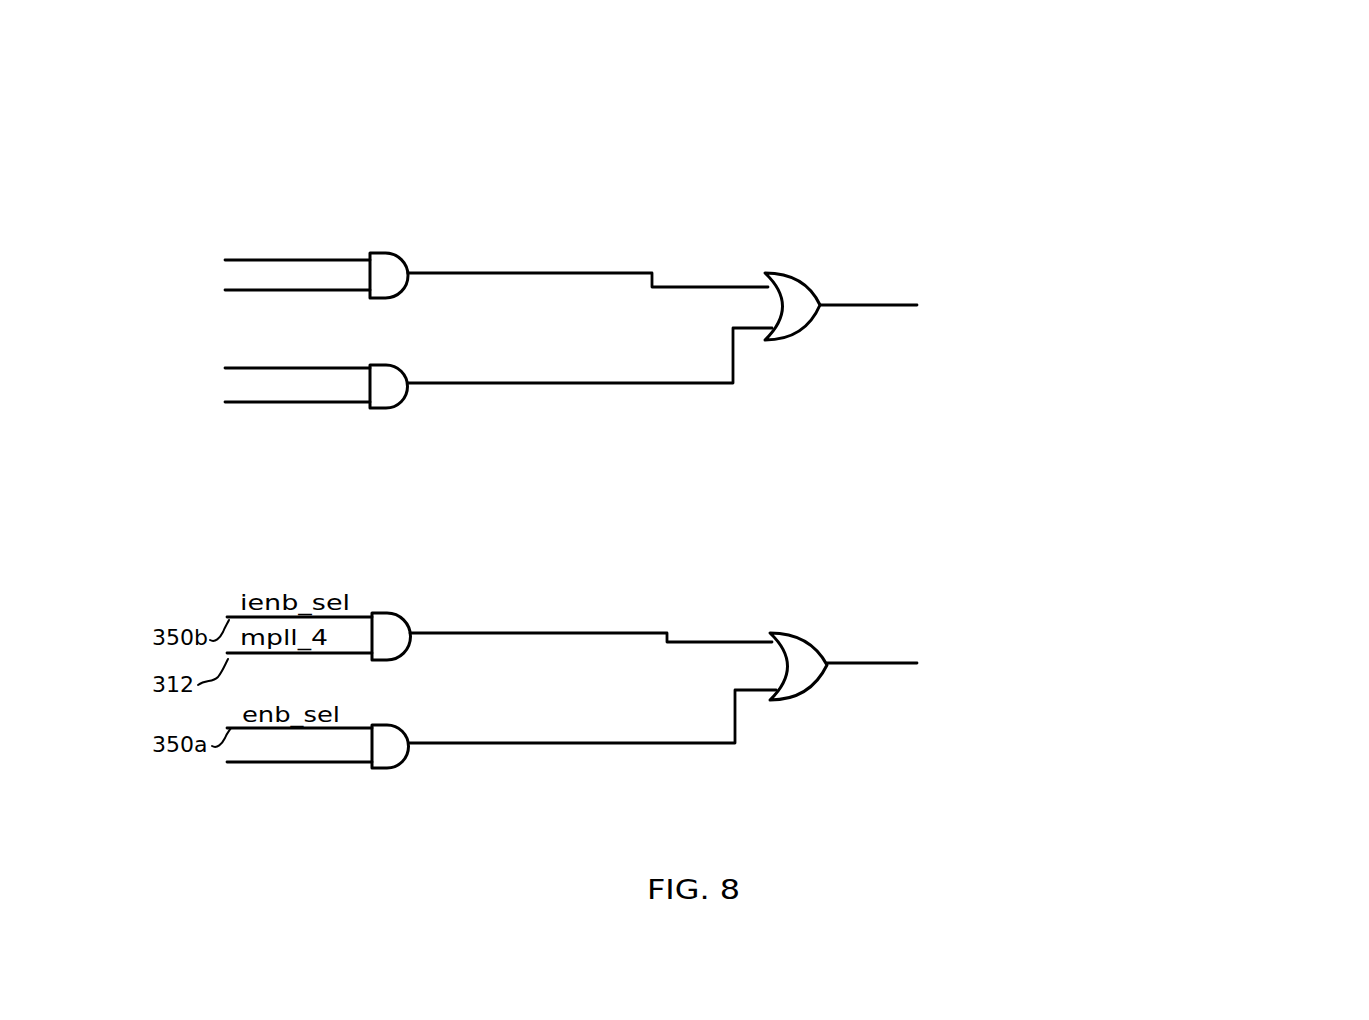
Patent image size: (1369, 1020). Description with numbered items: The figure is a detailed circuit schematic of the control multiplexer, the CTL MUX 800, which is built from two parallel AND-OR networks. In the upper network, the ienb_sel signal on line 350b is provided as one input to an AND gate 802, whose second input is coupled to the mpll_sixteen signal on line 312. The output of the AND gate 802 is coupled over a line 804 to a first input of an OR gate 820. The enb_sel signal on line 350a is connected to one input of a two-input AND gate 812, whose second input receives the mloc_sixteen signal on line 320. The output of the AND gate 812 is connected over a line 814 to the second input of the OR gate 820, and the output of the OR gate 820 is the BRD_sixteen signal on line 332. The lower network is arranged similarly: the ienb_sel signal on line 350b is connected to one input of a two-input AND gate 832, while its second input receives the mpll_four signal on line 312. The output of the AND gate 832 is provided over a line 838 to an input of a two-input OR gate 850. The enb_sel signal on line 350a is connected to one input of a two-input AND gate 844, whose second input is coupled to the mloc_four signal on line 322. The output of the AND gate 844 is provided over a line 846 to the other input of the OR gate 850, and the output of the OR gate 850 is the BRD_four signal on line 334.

The CTL MUX 800 is at (1231, 106).
The AND gate 802 is at (391, 253).
The line 804 is at (458, 275).
The 2-input AND gate 812 is at (390, 365).
The line 814 is at (580, 382).
The OR gate 820 is at (794, 277).
The line 332 is at (868, 306).
The line 312 is at (228, 293).
The line 320 is at (227, 403).
The line 322 is at (232, 763).
The line 350a is at (229, 371).
The line 350b is at (228, 262).
The 2-input AND gate 832 is at (385, 611).
The line 838 is at (493, 635).
The 2-input AND gate 844 is at (392, 725).
The line 846 is at (548, 745).
The 2-input OR gate 850 is at (817, 648).
The line 334 is at (868, 666).